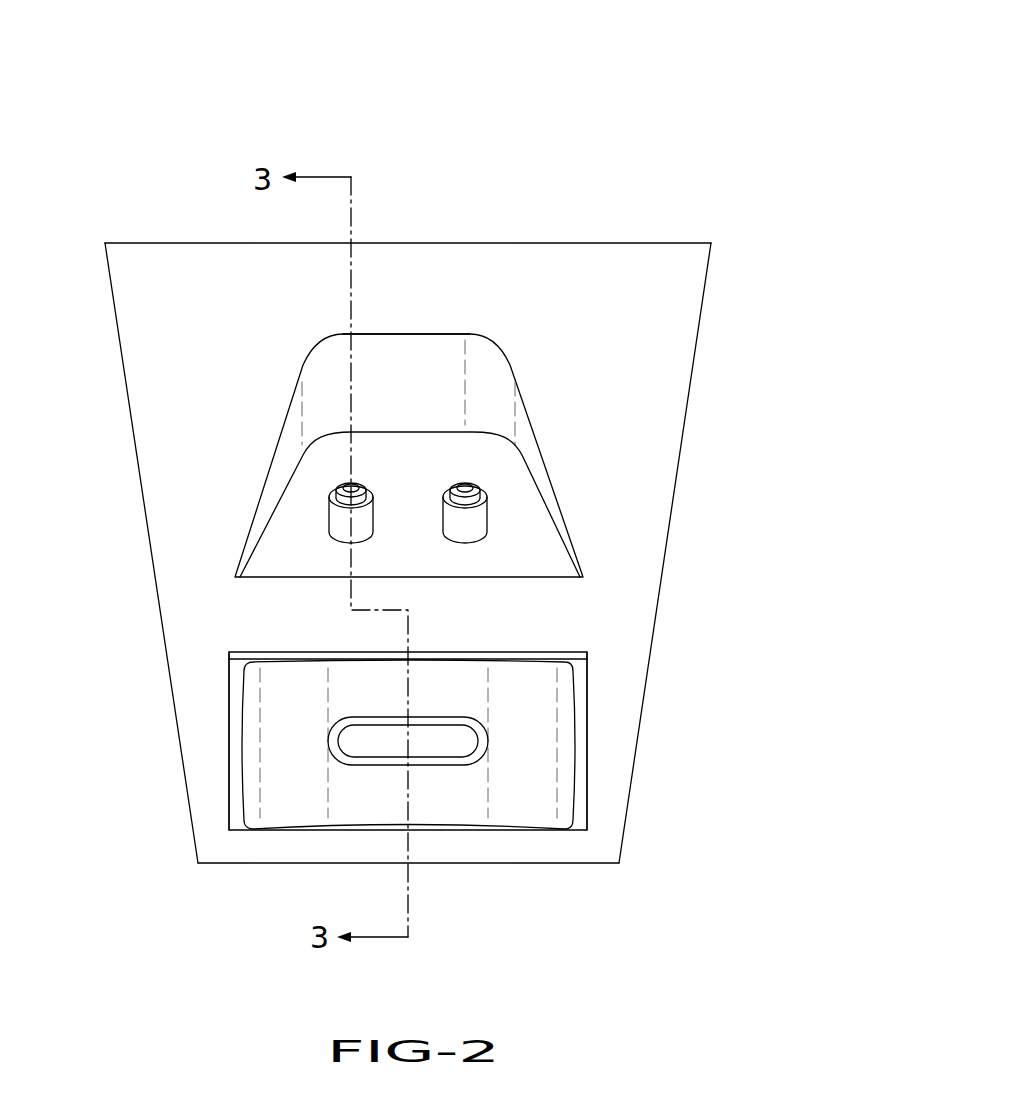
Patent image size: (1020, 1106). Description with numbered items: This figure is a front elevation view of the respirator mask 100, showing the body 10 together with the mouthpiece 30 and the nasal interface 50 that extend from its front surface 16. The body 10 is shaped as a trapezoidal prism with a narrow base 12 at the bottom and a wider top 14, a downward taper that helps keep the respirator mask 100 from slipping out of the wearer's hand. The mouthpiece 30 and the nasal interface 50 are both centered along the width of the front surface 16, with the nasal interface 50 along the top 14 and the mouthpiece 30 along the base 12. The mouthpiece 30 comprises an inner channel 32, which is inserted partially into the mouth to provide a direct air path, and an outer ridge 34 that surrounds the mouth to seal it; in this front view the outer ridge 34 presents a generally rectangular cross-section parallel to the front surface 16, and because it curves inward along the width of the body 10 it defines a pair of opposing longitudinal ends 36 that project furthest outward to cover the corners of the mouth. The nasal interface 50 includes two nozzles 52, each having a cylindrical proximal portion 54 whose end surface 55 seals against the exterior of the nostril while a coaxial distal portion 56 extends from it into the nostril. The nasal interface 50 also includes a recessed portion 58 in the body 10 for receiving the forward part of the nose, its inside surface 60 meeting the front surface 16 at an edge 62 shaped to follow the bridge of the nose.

The respirator mask 100 is at (606, 140).
The body 10 is at (158, 482).
The base 12 is at (661, 852).
The top 14 is at (738, 276).
The front surface 16 is at (133, 318).
The mouthpiece 30 is at (527, 840).
The inner channel 32 is at (445, 765).
The outer ridge 34 is at (560, 652).
The longitudinal ends 36 is at (229, 752).
The nasal interface 50 is at (546, 362).
The nozzle 52 is at (345, 545).
The proximal portion 54 is at (330, 517).
The end surface 55 is at (336, 497).
The distal portion 56 is at (345, 488).
The recessed portion 58 is at (268, 395).
The inside surface 60 is at (392, 368).
The edge 62 is at (452, 336).